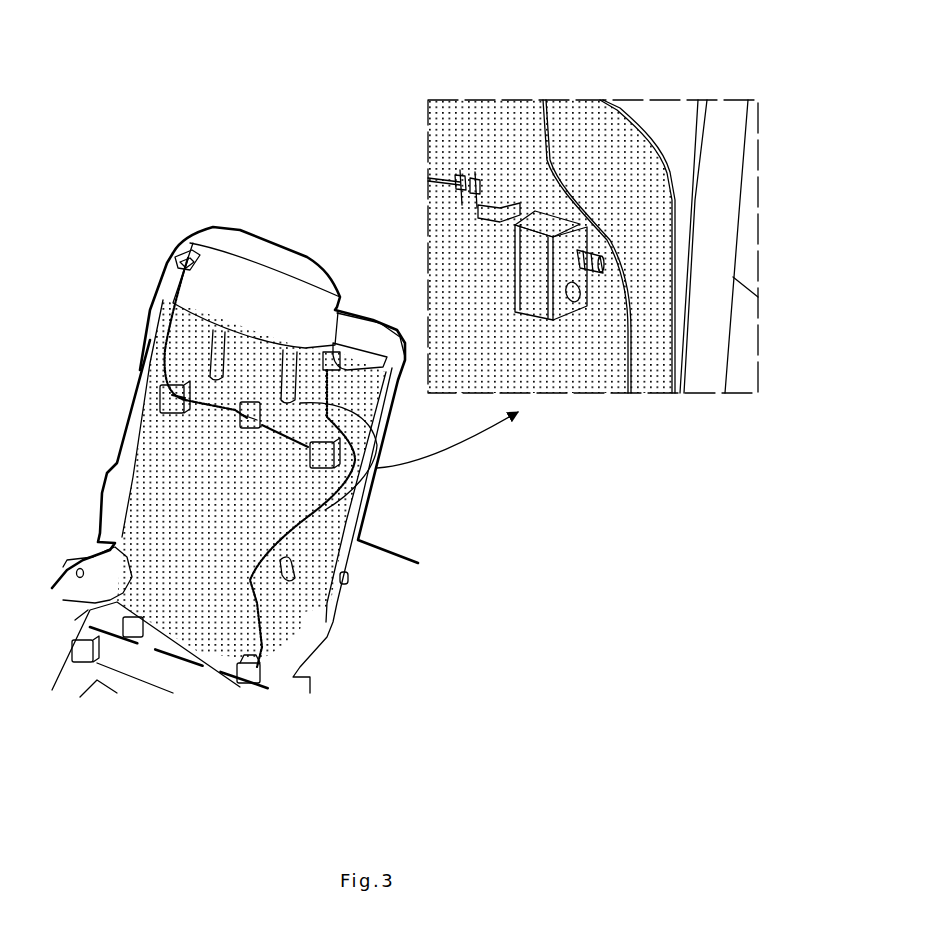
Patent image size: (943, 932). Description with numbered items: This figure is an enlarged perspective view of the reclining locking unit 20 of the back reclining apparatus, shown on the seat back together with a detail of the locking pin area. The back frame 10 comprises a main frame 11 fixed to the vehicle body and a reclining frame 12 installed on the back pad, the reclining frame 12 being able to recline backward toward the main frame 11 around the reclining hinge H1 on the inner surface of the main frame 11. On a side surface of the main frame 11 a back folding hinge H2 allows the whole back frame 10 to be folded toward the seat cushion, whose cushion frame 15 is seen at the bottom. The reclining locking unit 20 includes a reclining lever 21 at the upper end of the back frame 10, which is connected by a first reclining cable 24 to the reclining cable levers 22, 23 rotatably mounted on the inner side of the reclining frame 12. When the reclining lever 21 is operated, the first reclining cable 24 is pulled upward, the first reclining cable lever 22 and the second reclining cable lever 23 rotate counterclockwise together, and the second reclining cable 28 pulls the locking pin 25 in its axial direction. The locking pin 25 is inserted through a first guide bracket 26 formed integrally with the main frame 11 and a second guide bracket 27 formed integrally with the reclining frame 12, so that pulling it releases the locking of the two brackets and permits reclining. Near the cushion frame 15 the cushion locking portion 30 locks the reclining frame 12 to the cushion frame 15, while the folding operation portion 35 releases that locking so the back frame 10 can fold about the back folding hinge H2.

The back frame 10 is at (38, 380).
The main frame 11 is at (135, 405).
The reclining frame 12 is at (130, 455).
The cushion frame 15 is at (65, 625).
The reclining locking unit 20 is at (167, 333).
The reclining lever 21 is at (188, 253).
The first reclining cable lever 22 is at (258, 395).
The second reclining cable lever 23 is at (248, 400).
The first reclining cable 24 is at (153, 360).
The locking pin 25 is at (600, 274).
The first guide bracket 26 is at (538, 303).
The second guide bracket 27 is at (574, 306).
The second reclining cable 28 is at (275, 440).
The cushion locking portion 30 is at (292, 672).
The folding operation portion 35 is at (353, 338).
The reclining hinge H1 is at (350, 580).
The back folding hinge H2 is at (70, 565).